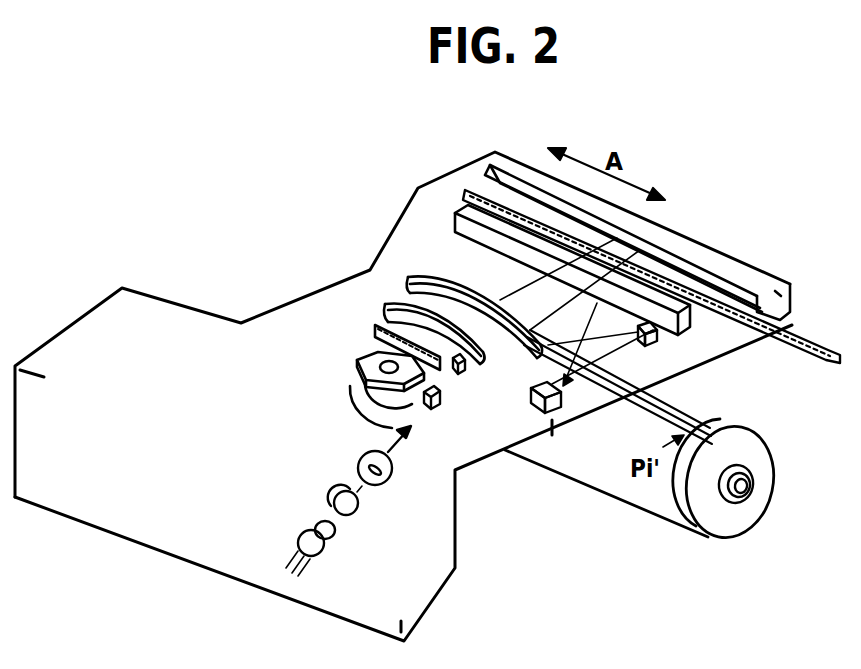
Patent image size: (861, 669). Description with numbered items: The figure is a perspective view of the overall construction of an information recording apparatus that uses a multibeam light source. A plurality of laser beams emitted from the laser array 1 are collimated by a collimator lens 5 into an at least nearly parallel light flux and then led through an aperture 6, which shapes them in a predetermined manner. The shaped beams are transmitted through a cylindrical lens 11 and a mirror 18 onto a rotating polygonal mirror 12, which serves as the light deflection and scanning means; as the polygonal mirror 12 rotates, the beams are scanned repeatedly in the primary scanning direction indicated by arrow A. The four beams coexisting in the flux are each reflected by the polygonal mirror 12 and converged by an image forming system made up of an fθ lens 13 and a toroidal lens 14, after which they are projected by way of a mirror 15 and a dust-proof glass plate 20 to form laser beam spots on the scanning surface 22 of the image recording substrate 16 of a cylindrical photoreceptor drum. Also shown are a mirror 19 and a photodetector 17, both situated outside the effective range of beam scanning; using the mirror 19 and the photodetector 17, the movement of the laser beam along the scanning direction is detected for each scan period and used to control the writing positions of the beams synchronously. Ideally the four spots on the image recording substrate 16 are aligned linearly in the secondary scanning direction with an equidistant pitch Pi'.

The laser array 1 is at (298, 528).
The collimator lens 5 is at (358, 517).
The aperture 6 is at (363, 462).
The cylindrical lens 11 is at (431, 410).
The rotating polygonal mirror 12 is at (375, 352).
The fθ lens 13 is at (458, 295).
The toroidal lens 14 is at (690, 328).
The mirror 15 is at (668, 232).
The image recording substrate 16 is at (742, 530).
The photodetector 17 is at (543, 413).
The mirror 18 is at (462, 376).
The mirror 19 is at (660, 345).
The dust-proof glass plate 20 is at (800, 340).
The scanning surface 22 is at (774, 462).